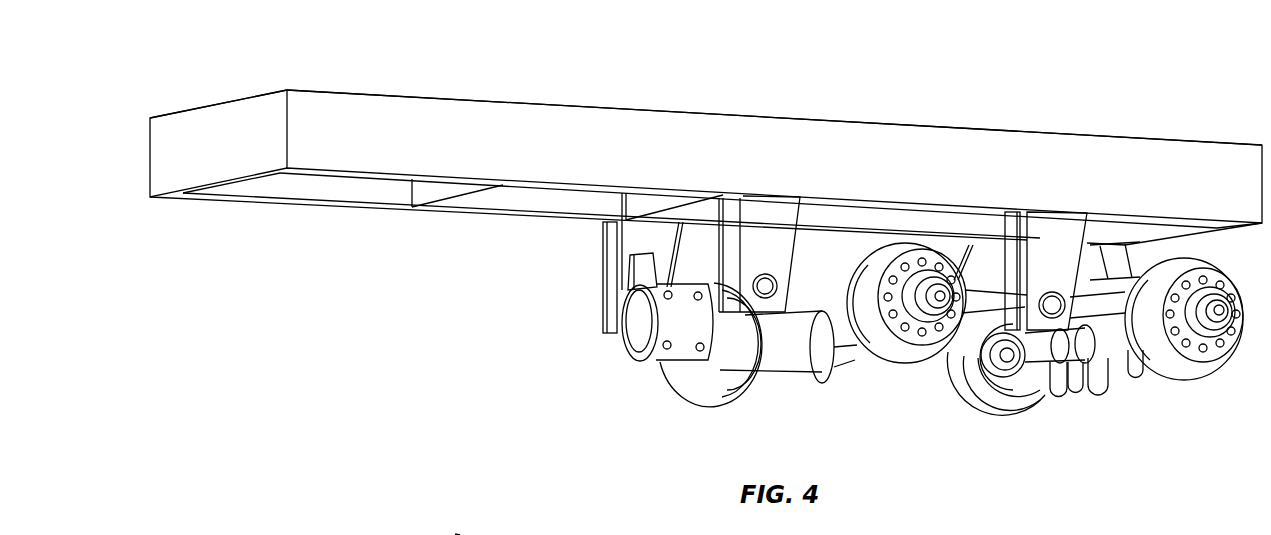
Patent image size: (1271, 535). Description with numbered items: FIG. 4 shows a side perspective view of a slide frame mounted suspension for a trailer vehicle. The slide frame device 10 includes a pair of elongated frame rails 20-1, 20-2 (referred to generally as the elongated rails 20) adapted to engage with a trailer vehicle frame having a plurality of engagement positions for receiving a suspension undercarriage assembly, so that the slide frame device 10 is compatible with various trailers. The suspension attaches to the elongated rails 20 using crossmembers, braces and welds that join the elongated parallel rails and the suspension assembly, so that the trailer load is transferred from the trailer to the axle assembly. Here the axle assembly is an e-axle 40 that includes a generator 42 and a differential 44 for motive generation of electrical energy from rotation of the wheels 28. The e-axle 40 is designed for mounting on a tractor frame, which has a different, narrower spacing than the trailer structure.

The slide frame device 10 is at (512, 66).
The elongated frame rails 20 is at (458, 534).
The elongated frame rail 20-1 is at (618, 108).
The elongated frame rail 20-2 is at (373, 210).
The wheel 28 is at (905, 372).
The e-axle 40 is at (646, 398).
The generator 42 is at (623, 355).
The differential 44 is at (817, 385).